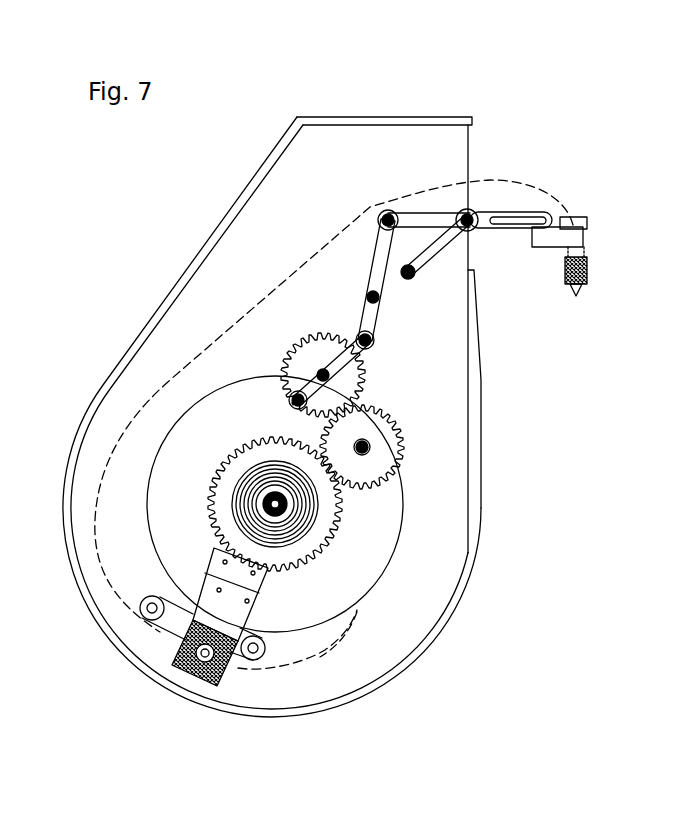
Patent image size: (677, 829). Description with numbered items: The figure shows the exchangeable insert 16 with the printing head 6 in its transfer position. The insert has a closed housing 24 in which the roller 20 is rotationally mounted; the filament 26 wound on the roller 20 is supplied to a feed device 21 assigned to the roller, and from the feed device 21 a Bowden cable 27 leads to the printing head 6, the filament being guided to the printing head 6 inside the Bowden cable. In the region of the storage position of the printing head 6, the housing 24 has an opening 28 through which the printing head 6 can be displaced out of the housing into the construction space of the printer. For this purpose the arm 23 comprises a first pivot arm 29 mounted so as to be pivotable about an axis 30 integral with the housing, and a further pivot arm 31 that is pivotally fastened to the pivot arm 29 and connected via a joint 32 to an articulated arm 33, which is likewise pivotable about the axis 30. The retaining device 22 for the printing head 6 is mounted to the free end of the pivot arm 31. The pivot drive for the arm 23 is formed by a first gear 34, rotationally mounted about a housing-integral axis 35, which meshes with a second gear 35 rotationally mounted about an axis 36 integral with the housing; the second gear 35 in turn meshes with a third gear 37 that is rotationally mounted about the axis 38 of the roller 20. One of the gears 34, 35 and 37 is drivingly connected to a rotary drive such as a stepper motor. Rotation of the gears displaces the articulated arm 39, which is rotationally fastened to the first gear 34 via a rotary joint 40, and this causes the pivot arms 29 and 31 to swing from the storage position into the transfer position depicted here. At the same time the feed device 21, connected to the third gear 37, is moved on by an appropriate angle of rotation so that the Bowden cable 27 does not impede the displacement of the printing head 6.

The exchangeable insert 16 is at (493, 93).
The printing head 6 is at (590, 270).
The roller 20 is at (388, 532).
The feed device 21 is at (220, 675).
The retaining device 22 is at (540, 247).
The arm 23 is at (362, 192).
The closed housing 24 is at (340, 117).
The filament 26 is at (320, 657).
The Bowden cable 27 is at (163, 392).
The opening 28 is at (471, 147).
The first pivot arm 29 is at (375, 267).
The axis integral with the housing 30 is at (410, 280).
The pivot arm 31 is at (428, 214).
The joint 32 is at (470, 229).
The articulated arm 33 is at (436, 253).
The first gear 34 is at (290, 362).
The second gear 35 is at (320, 370).
The axis integral with the housing 36 is at (368, 450).
The third gear 37 is at (328, 548).
The axis of the roller 38 is at (280, 512).
The articulated arm 39 is at (348, 360).
The rotary joint 40 is at (292, 403).